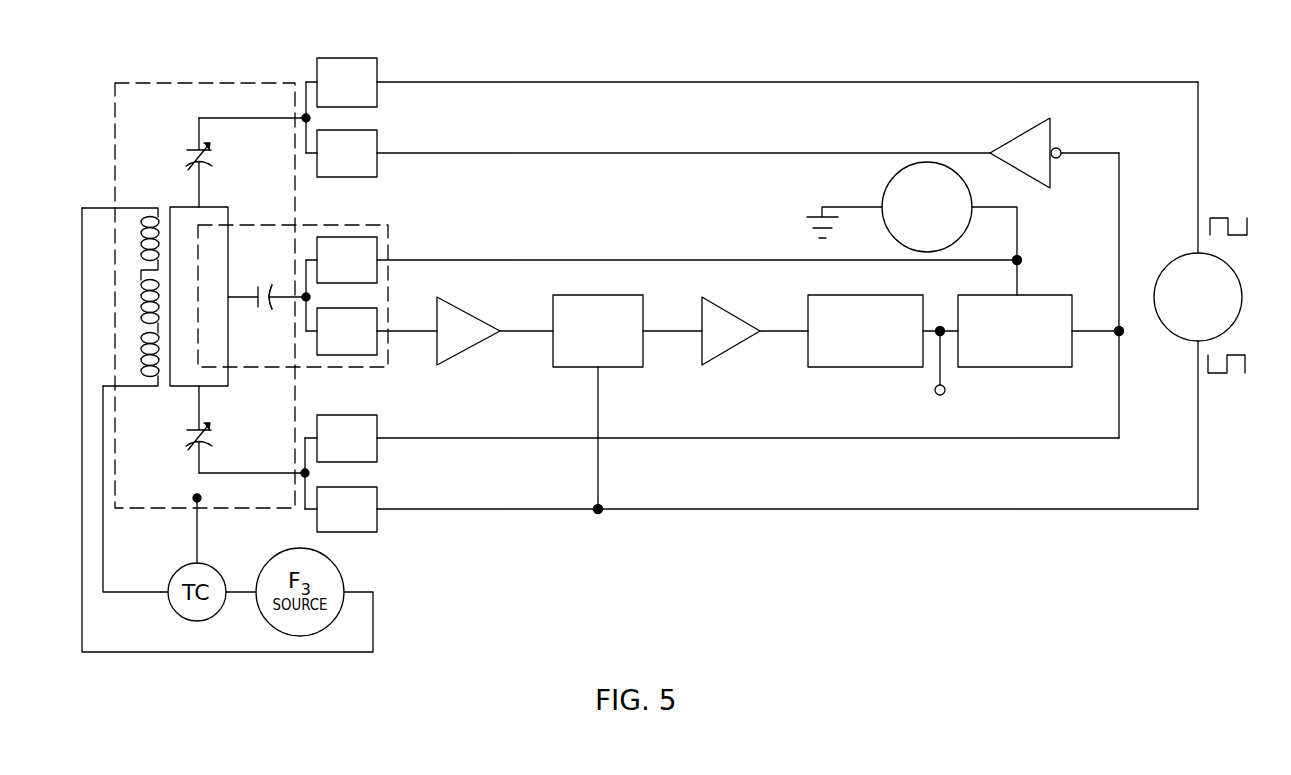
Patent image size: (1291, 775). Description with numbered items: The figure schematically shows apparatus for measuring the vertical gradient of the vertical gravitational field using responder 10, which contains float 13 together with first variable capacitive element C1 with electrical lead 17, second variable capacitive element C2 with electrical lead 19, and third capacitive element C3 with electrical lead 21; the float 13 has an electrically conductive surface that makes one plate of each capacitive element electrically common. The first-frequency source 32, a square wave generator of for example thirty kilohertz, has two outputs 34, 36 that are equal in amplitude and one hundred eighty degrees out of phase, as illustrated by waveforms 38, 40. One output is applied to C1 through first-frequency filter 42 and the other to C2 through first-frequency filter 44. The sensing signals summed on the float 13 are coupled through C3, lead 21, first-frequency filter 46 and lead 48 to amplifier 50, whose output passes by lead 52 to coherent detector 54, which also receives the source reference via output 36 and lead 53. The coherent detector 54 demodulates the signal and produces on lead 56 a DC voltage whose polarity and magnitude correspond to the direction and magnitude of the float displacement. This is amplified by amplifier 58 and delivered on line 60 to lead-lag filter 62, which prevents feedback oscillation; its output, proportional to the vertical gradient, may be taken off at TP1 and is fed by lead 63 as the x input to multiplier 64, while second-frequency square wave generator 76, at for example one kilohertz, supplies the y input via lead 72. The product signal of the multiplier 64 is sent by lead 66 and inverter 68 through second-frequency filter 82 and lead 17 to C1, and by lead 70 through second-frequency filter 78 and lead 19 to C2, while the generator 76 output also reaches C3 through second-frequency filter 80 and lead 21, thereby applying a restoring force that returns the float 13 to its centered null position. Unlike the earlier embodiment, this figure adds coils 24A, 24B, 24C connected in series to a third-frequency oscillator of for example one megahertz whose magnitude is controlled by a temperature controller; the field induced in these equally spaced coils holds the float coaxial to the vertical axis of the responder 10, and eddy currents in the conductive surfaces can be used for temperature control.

The responder 10 is at (185, 83).
The float 13 is at (174, 208).
The electrical lead 17 is at (268, 122).
The electrical lead 19 is at (265, 473).
The electrical lead 21 is at (286, 310).
The coil 24A is at (133, 237).
The coil 24B is at (143, 298).
The coil 24C is at (143, 362).
The first variable capacitive element C1 is at (193, 148).
The second variable capacitive element C2 is at (190, 432).
The third capacitive element C3 is at (257, 290).
The F1 source 32 is at (1188, 255).
The output 34 is at (1200, 150).
The output 36 is at (1198, 468).
The waveform 38 is at (1228, 215).
The waveform 40 is at (1228, 375).
The F1 filter 42 is at (365, 58).
The F1 filter 44 is at (377, 532).
The F1 filter 46 is at (350, 355).
The lead 48 is at (413, 331).
The amplifier 50 is at (477, 311).
The lead 52 is at (540, 336).
The lead 53 is at (598, 397).
The coherent detector 54 is at (553, 307).
The lead 56 is at (676, 331).
The amplifier 58 is at (740, 312).
The line 60 is at (788, 334).
The lead-lag filter 62 is at (806, 312).
The lead 63 is at (927, 315).
The multiplier 64 is at (1047, 362).
The lead 66 is at (1094, 331).
The inverter 68 is at (1012, 135).
The lead 70 is at (1119, 400).
The lead 72 is at (1017, 232).
The F2 square wave generator 76 is at (884, 190).
The F2 filter 78 is at (377, 452).
The F2 filter 80 is at (345, 237).
The F2 filter 82 is at (377, 170).
The test point TP1 is at (932, 394).